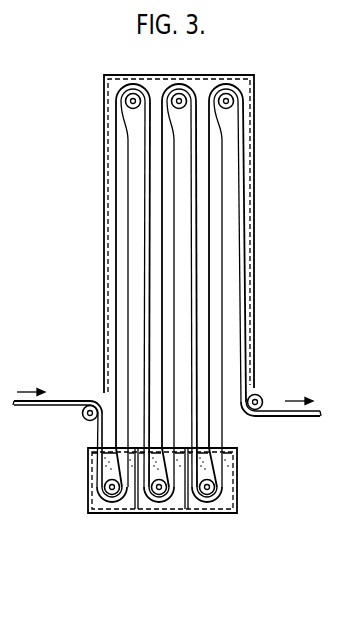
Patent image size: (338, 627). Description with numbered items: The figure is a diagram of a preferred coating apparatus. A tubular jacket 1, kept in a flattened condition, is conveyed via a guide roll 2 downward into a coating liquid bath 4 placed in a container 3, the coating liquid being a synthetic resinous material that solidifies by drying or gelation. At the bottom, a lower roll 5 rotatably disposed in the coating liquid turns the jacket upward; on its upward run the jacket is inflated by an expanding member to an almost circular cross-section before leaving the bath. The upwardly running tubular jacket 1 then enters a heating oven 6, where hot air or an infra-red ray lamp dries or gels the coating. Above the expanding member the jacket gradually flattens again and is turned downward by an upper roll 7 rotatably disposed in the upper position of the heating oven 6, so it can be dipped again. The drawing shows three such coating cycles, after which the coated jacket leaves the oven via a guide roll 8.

The tubular jacket 1 is at (72, 400).
The guide roll 2 is at (84, 418).
The container 3 is at (130, 514).
The coating liquid bath 4 is at (97, 507).
The lower roll 5 is at (100, 487).
The heating oven 6 is at (245, 76).
The upper roll 7 is at (130, 92).
The guide roll 8 is at (260, 398).